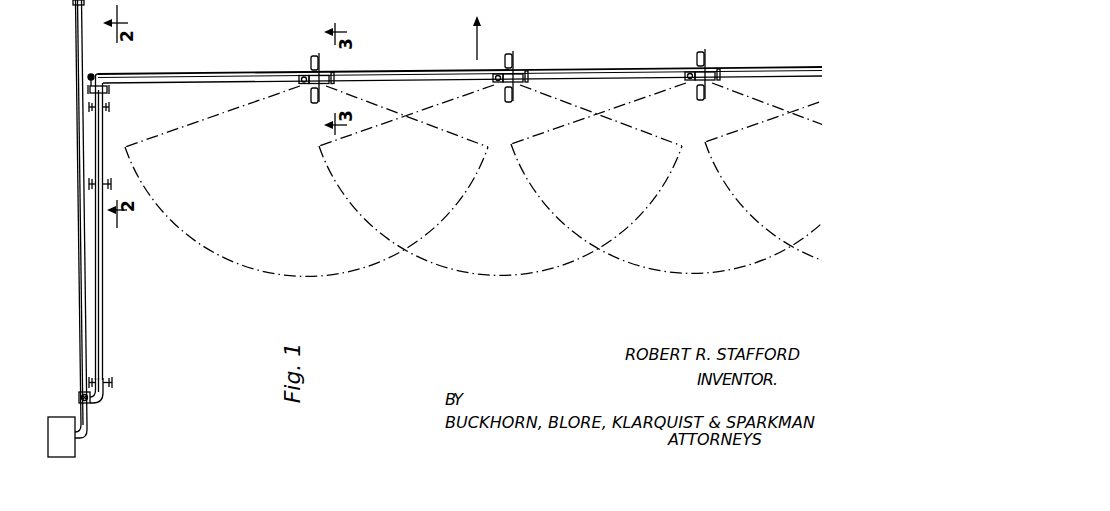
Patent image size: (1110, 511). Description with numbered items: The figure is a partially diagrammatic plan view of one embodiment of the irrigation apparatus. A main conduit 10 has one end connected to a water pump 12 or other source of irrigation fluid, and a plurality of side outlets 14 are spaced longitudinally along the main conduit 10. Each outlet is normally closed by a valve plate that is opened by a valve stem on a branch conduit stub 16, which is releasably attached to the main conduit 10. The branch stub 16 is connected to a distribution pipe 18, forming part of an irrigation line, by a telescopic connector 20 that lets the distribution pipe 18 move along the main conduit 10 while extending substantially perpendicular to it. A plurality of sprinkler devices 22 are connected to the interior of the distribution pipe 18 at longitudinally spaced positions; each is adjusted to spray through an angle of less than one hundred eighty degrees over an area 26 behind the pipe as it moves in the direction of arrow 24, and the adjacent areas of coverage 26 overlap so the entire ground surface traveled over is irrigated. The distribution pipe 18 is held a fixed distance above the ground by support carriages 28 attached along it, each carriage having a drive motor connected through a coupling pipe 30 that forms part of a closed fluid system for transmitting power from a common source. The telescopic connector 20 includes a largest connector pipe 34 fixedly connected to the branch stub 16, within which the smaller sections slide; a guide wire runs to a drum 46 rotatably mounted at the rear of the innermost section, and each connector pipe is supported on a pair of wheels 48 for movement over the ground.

The main conduit 10 is at (78, 137).
The water pump 12 is at (68, 417).
The side outlets 14 is at (80, 393).
The branch conduit stub 16 is at (90, 404).
The distribution pipe 18 is at (190, 84).
The telescopic connector 20 is at (108, 305).
The sprinkler devices 22 is at (303, 86).
The arrow 24 is at (476, 44).
The area of coverage 26 is at (239, 262).
The support carriages 28 is at (312, 64).
The coupling pipe 30 is at (193, 72).
The connector pipe 34 is at (103, 260).
The drum 46 is at (98, 72).
The wheels 48 is at (107, 184).